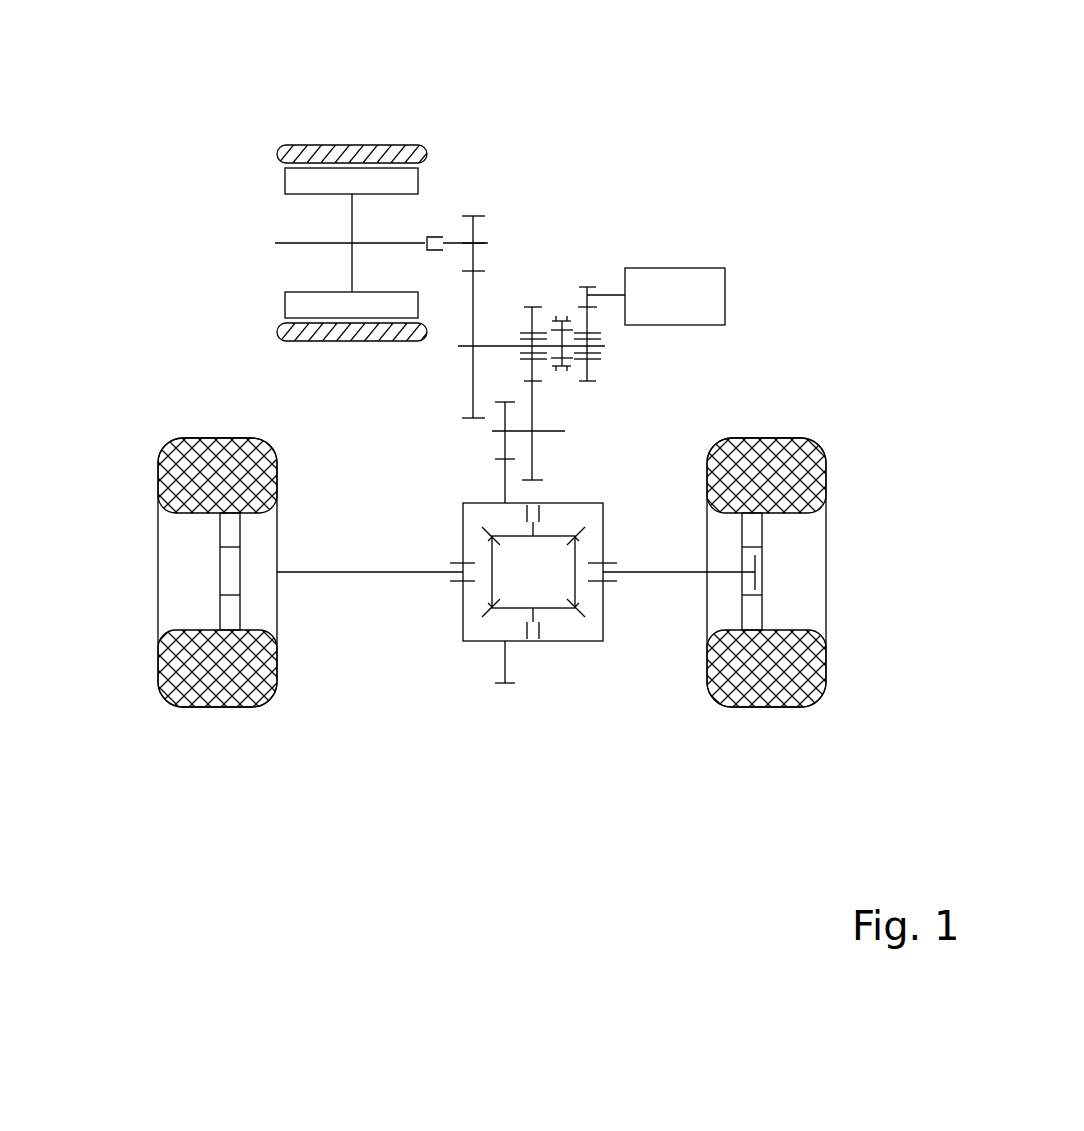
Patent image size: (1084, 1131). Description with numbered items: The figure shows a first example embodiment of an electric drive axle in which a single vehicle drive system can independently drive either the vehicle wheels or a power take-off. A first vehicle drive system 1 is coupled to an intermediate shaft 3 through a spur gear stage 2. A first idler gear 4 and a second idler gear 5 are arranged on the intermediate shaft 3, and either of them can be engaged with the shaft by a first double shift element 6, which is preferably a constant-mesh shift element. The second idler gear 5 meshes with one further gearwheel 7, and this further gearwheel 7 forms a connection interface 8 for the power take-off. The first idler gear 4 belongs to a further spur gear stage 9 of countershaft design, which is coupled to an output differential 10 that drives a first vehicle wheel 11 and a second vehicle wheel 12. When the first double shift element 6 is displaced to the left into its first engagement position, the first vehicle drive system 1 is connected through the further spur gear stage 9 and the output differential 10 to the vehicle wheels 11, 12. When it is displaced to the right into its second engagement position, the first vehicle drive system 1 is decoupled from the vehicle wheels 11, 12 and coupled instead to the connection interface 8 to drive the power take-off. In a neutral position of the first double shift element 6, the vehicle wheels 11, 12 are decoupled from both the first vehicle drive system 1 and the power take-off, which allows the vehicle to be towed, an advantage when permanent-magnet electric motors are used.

The first vehicle drive system 1 is at (293, 222).
The spur gear stage 2 is at (475, 198).
The intermediate shaft 3 is at (497, 347).
The first idler gear 4 is at (529, 305).
The second idler gear 5 is at (590, 325).
The first double shift element 6 is at (563, 296).
The further gearwheel 7 is at (594, 284).
The connection interface 8 is at (616, 288).
The further spur gear stage 9 is at (485, 442).
The output differential 10 is at (591, 659).
The first vehicle wheel 11 is at (747, 680).
The second vehicle wheel 12 is at (208, 672).